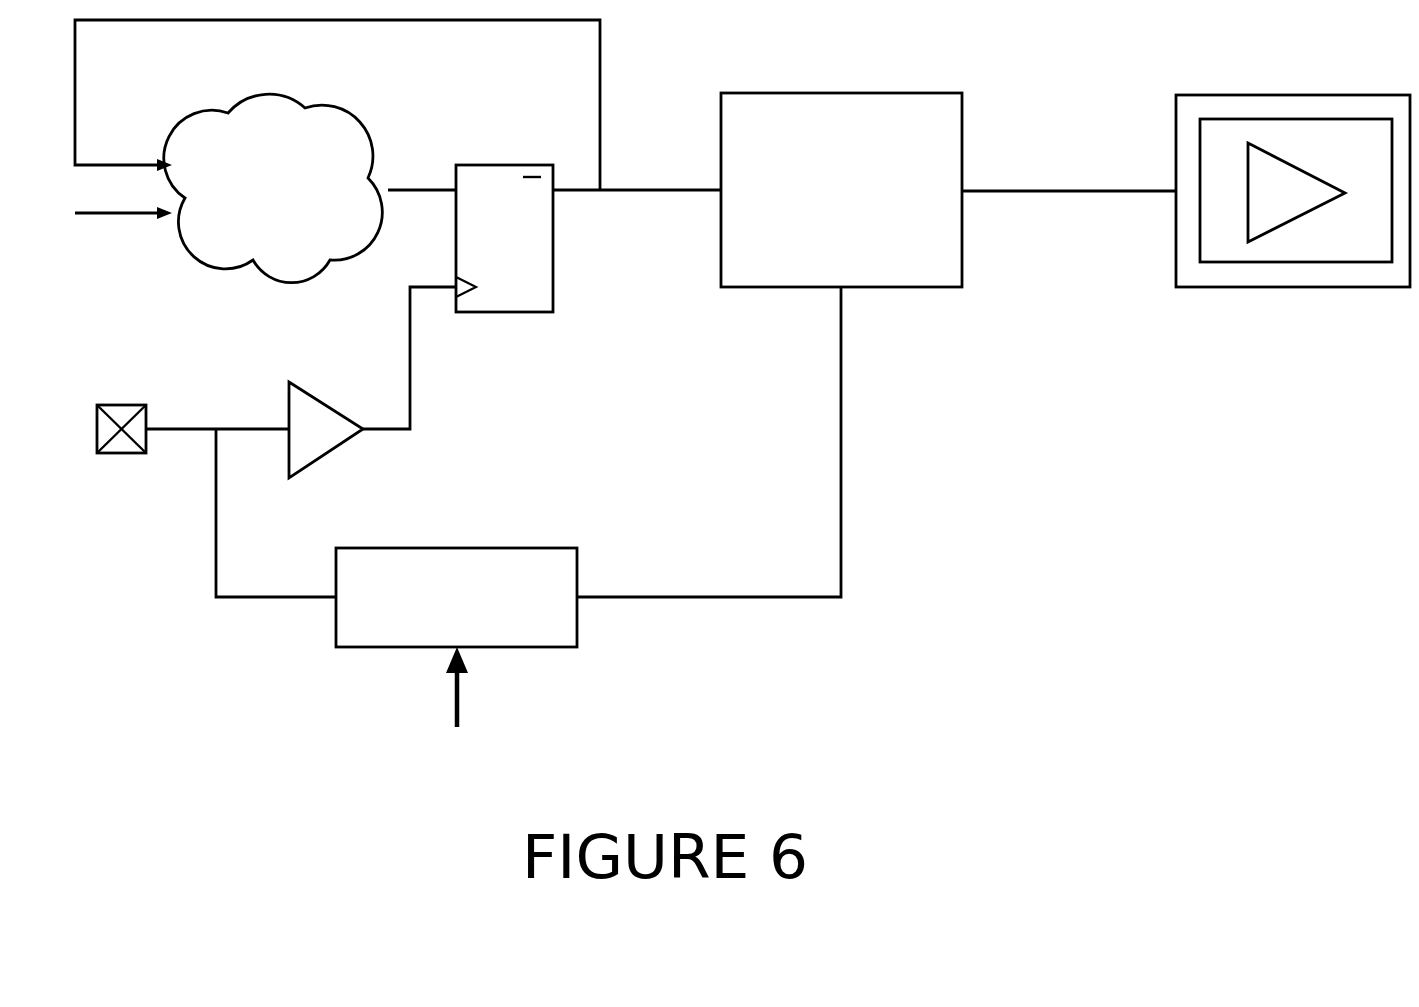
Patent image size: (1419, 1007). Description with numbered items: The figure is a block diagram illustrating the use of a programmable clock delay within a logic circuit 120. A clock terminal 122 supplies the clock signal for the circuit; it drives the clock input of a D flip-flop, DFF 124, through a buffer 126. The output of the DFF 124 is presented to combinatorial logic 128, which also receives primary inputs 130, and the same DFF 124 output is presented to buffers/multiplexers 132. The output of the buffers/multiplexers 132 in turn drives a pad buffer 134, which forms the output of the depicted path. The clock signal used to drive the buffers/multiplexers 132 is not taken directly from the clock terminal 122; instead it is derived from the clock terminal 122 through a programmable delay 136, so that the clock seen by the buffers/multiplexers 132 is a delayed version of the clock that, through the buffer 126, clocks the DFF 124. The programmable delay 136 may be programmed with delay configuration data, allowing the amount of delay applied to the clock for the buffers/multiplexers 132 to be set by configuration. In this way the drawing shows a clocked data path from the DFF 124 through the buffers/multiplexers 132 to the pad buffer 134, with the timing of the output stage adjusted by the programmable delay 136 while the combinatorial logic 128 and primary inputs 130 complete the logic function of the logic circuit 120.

The logic circuit 120 is at (1193, 641).
The clock terminal 122 is at (155, 436).
The DFF 124 is at (505, 212).
The buffer 126 is at (326, 410).
The combinatorial logic 128 is at (301, 186).
The primary inputs 130 is at (123, 246).
The buffers/multiplexers 132 is at (881, 176).
The pad buffer 134 is at (1293, 164).
The programmable delay 136 is at (456, 625).